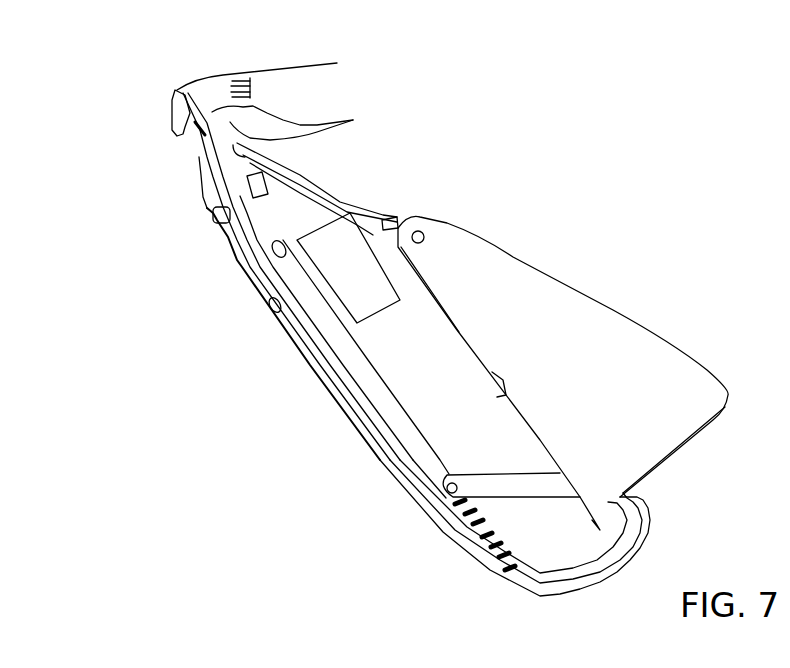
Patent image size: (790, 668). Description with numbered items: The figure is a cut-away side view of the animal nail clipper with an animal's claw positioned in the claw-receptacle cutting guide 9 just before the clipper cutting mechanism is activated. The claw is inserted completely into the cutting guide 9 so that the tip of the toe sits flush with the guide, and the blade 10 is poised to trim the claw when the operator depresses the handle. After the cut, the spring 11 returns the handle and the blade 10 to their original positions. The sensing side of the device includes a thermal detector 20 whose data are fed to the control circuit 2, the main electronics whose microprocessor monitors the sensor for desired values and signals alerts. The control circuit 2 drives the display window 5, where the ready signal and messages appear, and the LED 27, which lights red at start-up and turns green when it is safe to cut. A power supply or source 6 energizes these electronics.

The blade 10 is at (177, 93).
The claw-receptacle cutting guide 9 is at (207, 162).
The LED 27 is at (213, 213).
The thermal detector 20 is at (267, 153).
The control circuit 2 is at (347, 240).
The display window 5 is at (248, 283).
The power supply or source 6 is at (482, 397).
The spring 11 is at (443, 534).